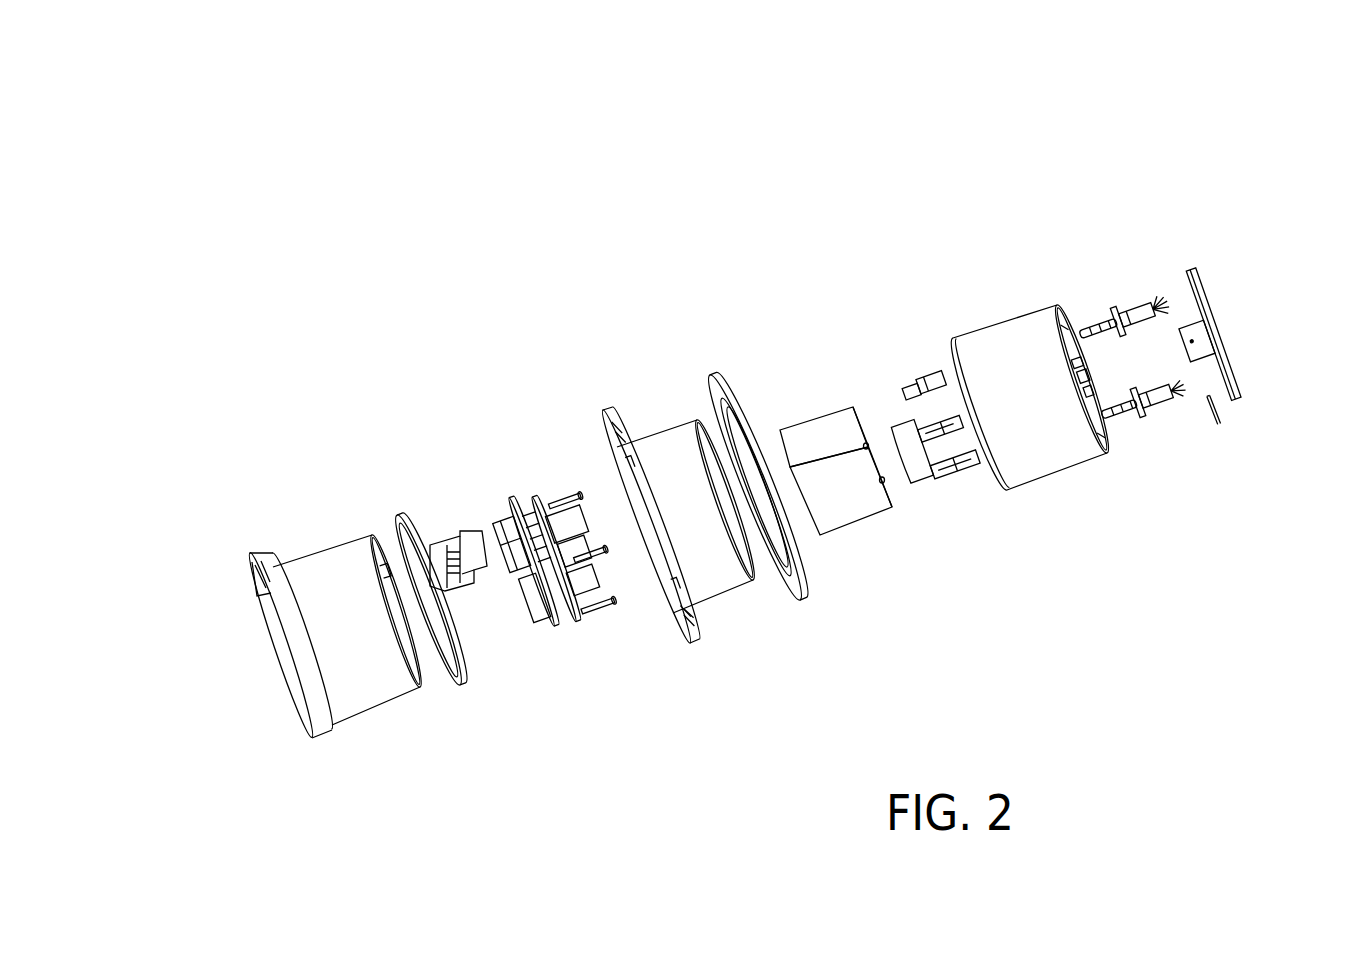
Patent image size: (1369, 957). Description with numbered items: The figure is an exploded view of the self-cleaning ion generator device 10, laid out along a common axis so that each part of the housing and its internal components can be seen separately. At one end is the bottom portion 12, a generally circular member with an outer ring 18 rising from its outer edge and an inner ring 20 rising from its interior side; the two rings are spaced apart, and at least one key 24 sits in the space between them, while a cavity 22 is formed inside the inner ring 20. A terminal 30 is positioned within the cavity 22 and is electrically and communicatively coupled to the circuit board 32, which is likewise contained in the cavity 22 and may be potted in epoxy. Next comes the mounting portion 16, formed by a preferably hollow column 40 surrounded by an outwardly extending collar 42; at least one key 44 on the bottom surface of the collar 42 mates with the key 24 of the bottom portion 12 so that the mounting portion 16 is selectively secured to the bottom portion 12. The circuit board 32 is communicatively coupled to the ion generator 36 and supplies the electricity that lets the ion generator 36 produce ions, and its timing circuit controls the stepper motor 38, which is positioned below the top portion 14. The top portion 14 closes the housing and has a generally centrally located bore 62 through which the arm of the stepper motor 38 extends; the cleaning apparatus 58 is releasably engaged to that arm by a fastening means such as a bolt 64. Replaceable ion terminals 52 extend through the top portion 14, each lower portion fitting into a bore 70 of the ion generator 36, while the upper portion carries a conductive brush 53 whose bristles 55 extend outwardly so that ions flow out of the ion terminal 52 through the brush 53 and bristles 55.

The self-cleaning ion generator device 10 is at (530, 200).
The bottom portion 12 is at (373, 684).
The top portion 14 is at (1069, 461).
The mounting portion 16 is at (668, 448).
The outer ring 18 is at (299, 690).
The inner ring 20 is at (335, 558).
The cavity 22 is at (384, 512).
The key 24 is at (277, 557).
The terminal 30 is at (920, 437).
The circuit board 32 is at (532, 497).
The ion generator 36 is at (815, 433).
The stepper motor 38 is at (907, 440).
The hollow column 40 is at (728, 583).
The collar 42 is at (692, 622).
The key 44 is at (636, 566).
The ion terminal 52 is at (1170, 401).
The brush 53 is at (1152, 292).
The bristles 55 is at (1160, 302).
The cleaning apparatus 58 is at (1219, 341).
The bore 62 is at (1109, 448).
The bolt 64 is at (1232, 406).
The bore 70 is at (870, 440).